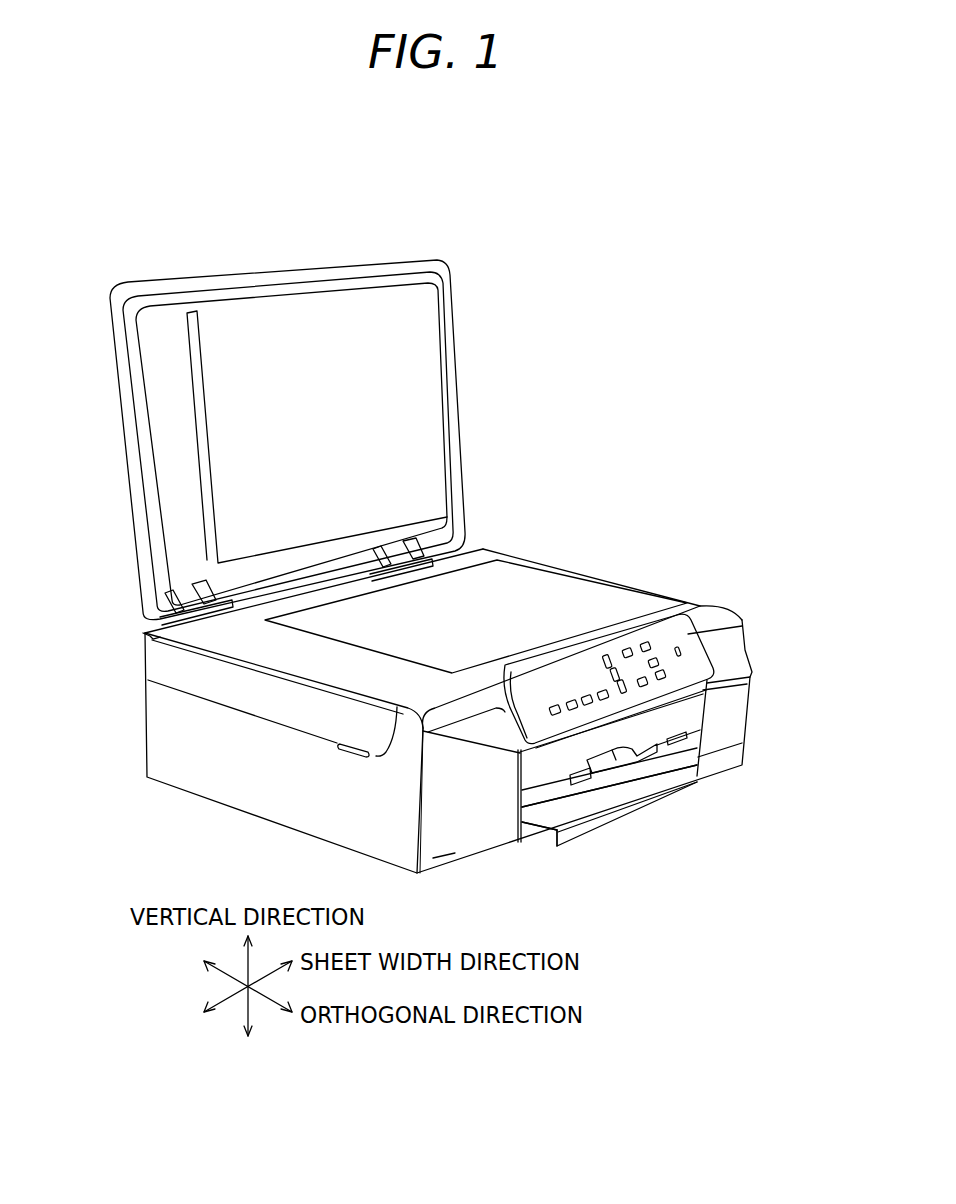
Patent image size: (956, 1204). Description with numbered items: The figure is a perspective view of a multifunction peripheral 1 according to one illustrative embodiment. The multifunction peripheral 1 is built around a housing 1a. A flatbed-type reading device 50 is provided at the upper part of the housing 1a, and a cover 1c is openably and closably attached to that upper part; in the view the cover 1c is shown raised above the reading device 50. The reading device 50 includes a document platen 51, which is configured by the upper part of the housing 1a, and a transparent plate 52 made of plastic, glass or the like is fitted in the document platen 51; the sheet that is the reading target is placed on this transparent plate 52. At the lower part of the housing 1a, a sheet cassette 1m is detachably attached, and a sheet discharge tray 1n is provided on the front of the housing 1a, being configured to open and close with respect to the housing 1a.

The multifunction peripheral 1 is at (588, 312).
The cover 1c is at (133, 445).
The flatbed-type reading device 50 is at (557, 560).
The document platen 51 is at (677, 595).
The transparent plate 52 is at (603, 593).
The housing 1a is at (738, 703).
The sheet discharge tray 1n is at (652, 756).
The sheet cassette 1m is at (617, 784).